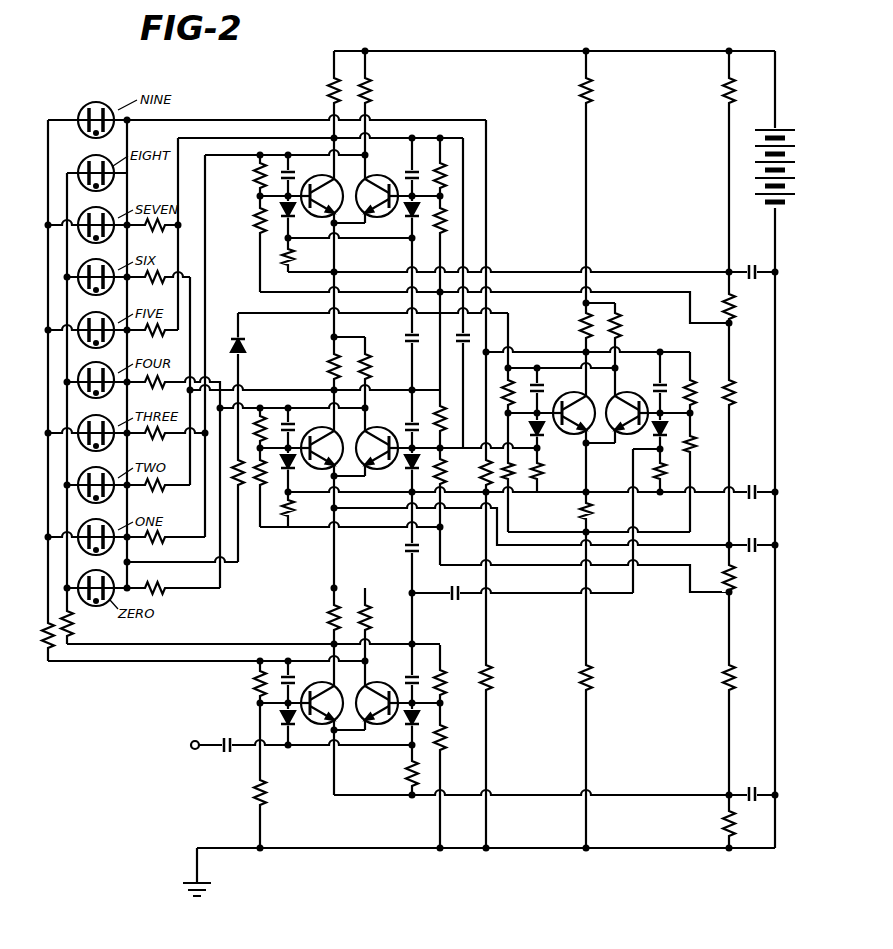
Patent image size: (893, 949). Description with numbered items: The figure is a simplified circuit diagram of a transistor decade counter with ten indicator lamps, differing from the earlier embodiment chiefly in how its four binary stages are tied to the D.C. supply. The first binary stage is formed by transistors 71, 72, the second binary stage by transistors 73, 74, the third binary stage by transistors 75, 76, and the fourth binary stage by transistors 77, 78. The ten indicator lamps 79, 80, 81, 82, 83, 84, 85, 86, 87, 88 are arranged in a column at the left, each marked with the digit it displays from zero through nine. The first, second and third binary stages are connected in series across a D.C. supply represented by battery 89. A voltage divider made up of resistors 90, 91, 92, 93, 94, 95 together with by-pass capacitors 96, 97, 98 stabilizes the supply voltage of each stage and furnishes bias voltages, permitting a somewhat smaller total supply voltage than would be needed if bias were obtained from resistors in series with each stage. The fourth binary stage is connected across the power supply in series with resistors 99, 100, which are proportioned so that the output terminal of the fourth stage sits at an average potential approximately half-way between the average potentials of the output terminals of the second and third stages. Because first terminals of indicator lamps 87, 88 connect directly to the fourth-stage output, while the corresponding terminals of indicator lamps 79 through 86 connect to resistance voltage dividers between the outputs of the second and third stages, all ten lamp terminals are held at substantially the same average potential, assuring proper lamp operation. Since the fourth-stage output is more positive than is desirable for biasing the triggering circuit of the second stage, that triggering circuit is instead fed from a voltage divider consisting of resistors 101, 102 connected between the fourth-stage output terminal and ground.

The transistor 71 is at (310, 677).
The transistor 72 is at (383, 685).
The transistor 73 is at (310, 422).
The transistor 74 is at (383, 430).
The transistor 75 is at (310, 170).
The transistor 76 is at (383, 178).
The transistor 77 is at (563, 387).
The transistor 78 is at (633, 395).
The indicator lamp 79 is at (88, 576).
The indicator lamp 80 is at (124, 523).
The indicator lamp 81 is at (88, 472).
The indicator lamp 82 is at (124, 417).
The indicator lamp 83 is at (88, 368).
The indicator lamp 84 is at (124, 313).
The indicator lamp 85 is at (88, 265).
The indicator lamp 86 is at (124, 208).
The indicator lamp 87 is at (81, 162).
The indicator lamp 88 is at (124, 103).
The battery 89 is at (782, 131).
The resistor 90 is at (734, 92).
The resistor 91 is at (723, 305).
The resistor 92 is at (724, 392).
The resistor 93 is at (723, 578).
The resistor 94 is at (723, 682).
The resistor 95 is at (723, 825).
The by-pass capacitor 96 is at (752, 263).
The by-pass capacitor 97 is at (752, 554).
The by-pass capacitor 98 is at (757, 779).
The resistor 99 is at (578, 92).
The resistor 100 is at (592, 680).
The resistor 101 is at (481, 474).
The resistor 102 is at (492, 683).